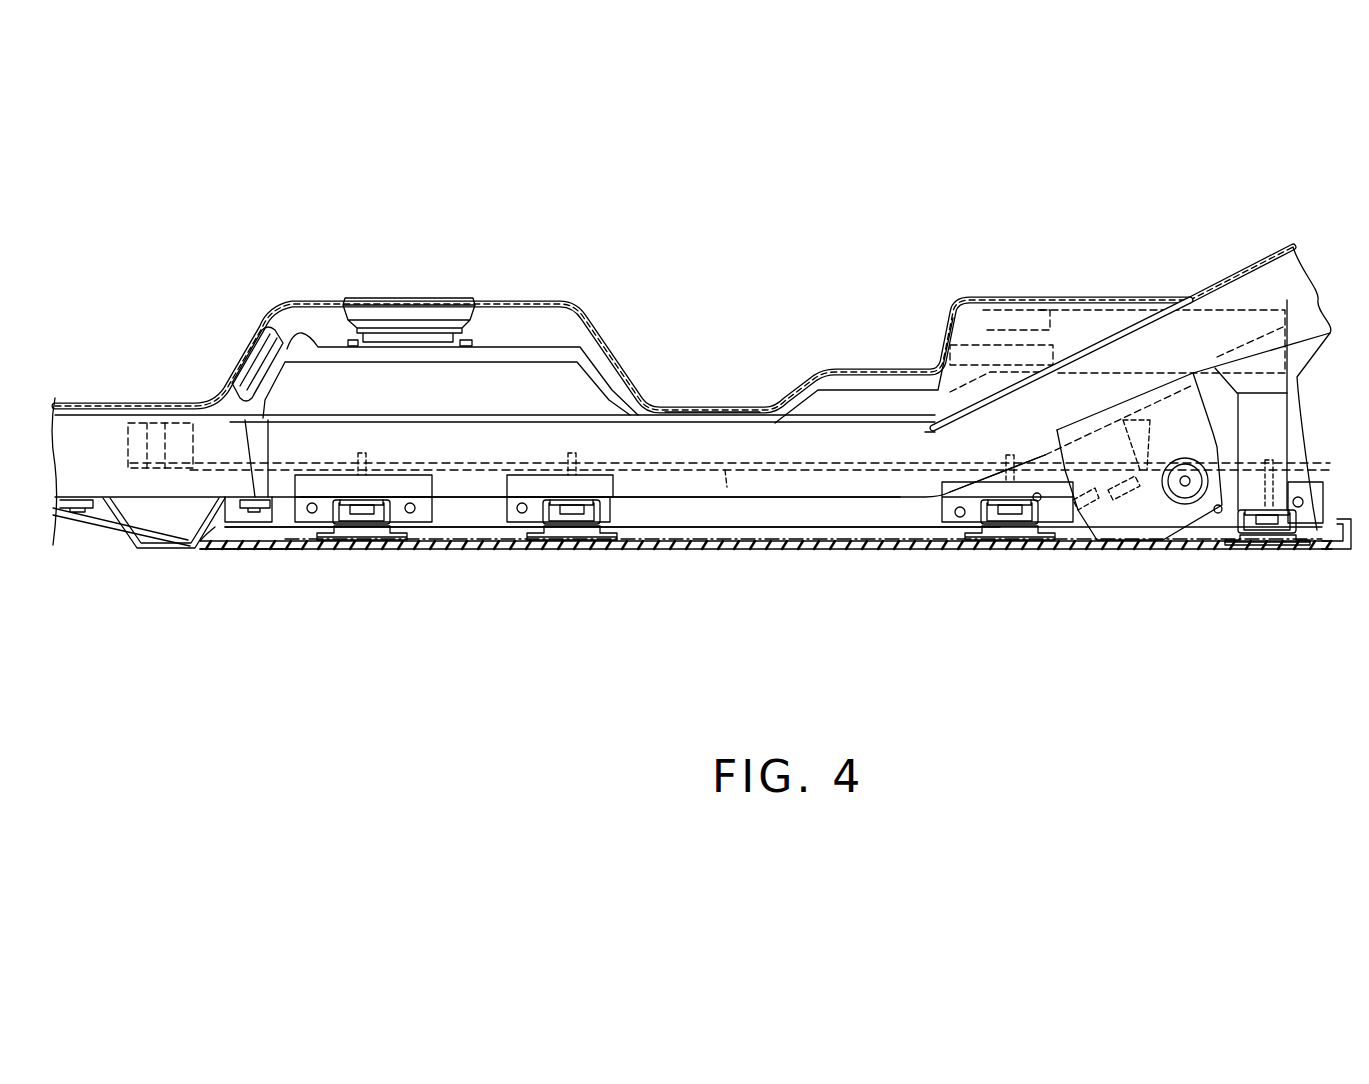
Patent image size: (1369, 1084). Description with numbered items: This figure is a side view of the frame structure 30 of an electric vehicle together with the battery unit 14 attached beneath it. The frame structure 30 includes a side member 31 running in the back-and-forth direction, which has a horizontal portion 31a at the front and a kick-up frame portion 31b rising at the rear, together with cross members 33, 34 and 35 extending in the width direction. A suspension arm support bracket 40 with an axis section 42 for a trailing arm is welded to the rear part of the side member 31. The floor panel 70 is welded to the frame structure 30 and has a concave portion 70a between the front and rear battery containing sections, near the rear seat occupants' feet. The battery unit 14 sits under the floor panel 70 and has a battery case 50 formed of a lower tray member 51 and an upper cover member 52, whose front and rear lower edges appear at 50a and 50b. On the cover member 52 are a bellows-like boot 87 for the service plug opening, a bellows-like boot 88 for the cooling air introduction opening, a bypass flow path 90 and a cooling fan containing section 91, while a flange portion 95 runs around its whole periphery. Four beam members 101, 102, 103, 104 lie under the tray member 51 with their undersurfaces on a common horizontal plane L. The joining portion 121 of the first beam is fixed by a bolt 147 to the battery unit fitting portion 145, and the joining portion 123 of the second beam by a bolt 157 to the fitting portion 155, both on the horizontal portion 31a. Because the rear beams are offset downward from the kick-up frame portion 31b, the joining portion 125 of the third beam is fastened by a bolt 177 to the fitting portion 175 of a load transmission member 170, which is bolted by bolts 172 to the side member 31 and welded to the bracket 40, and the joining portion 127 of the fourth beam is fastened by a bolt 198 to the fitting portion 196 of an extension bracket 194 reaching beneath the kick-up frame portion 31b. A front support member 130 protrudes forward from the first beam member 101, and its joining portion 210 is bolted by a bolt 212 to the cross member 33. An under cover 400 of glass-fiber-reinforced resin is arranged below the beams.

The battery unit 14 is at (453, 528).
The frame structure 30 is at (1308, 337).
The side member 31 is at (863, 492).
The horizontal portion 31a is at (680, 500).
The kick-up frame portion 31b is at (1123, 345).
The cross member 33 is at (195, 505).
The cross member 34 is at (727, 487).
The cross member 35 is at (983, 320).
The suspension arm support bracket 40 is at (1127, 518).
The axis section 42 is at (1186, 487).
The battery case 50 is at (874, 381).
The front lower edge of cover 50a is at (215, 527).
The rear lower edge of cover 50b is at (1327, 542).
The tray member 51 is at (815, 521).
The cover member 52 is at (598, 395).
The floor panel 70 is at (611, 333).
The concave portion 70a is at (737, 407).
The bellows-like boot 87 is at (475, 325).
The bellows-like boot 88 is at (273, 322).
The bypass flow path 90 is at (567, 352).
The cooling fan containing section 91 is at (1160, 295).
The flange portion 95 is at (780, 463).
The beam member 101 is at (300, 548).
The beam member 102 is at (527, 548).
The beam member 103 is at (962, 548).
The beam member 104 is at (1233, 545).
The joining portion 121 is at (377, 500).
The joining portion 123 is at (550, 497).
The joining portion 125 is at (1000, 500).
The joining portion 127 is at (1275, 500).
The front support member 130 is at (133, 505).
The battery unit fitting portion 145 is at (334, 497).
The bolt 147 is at (363, 514).
The battery unit fitting portion 155 is at (614, 498).
The bolt 157 is at (567, 514).
The load transmission member 170 is at (1046, 457).
The bolt 172 is at (1140, 505).
The battery unit fitting portion 175 is at (1031, 516).
The bolt 177 is at (1009, 514).
The extension bracket 194 is at (1263, 430).
The battery unit fitting portion 196 is at (1257, 535).
The bolt 198 is at (1266, 524).
The joining portion 210 is at (140, 423).
The bolt 212 is at (168, 430).
The under cover 400 is at (620, 552).
The plane L is at (783, 540).